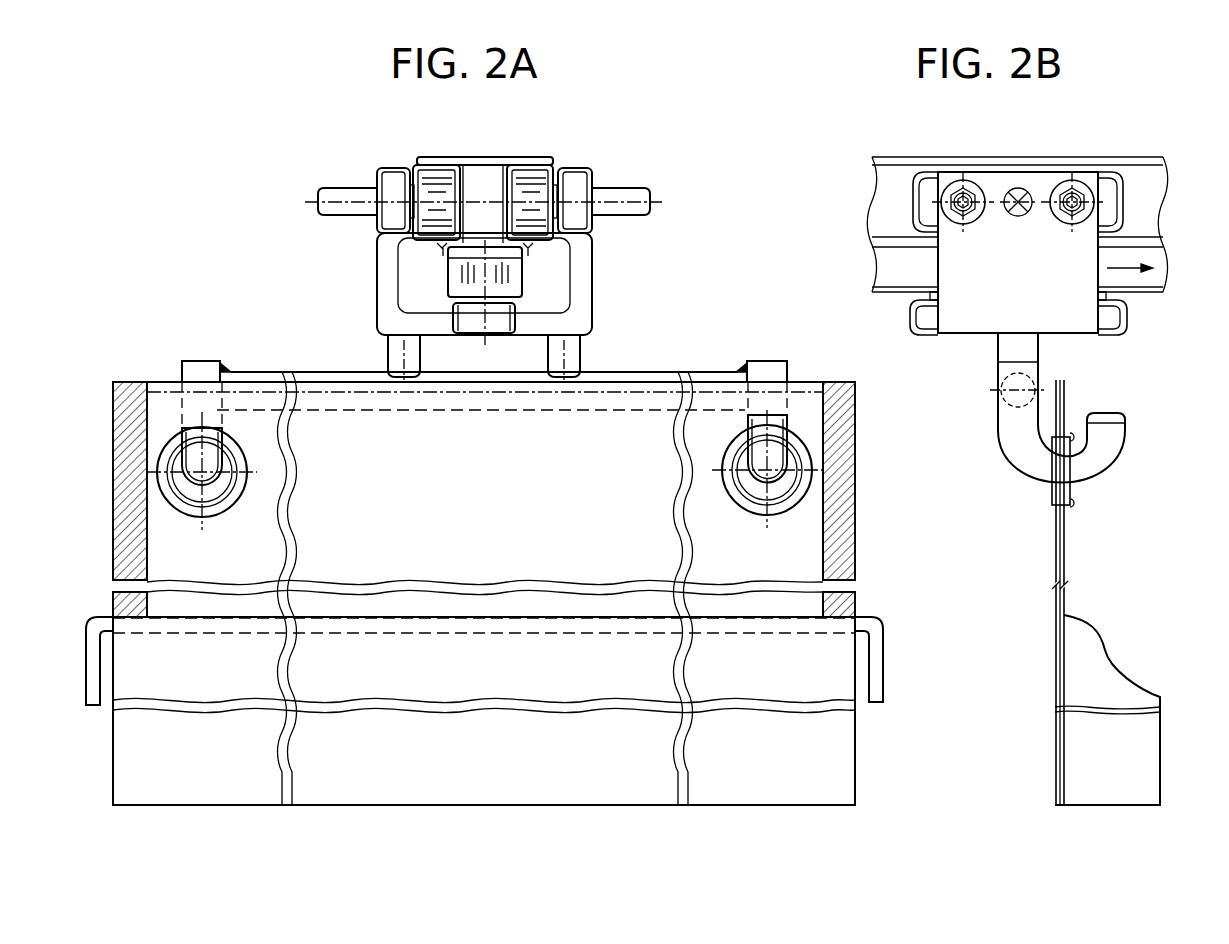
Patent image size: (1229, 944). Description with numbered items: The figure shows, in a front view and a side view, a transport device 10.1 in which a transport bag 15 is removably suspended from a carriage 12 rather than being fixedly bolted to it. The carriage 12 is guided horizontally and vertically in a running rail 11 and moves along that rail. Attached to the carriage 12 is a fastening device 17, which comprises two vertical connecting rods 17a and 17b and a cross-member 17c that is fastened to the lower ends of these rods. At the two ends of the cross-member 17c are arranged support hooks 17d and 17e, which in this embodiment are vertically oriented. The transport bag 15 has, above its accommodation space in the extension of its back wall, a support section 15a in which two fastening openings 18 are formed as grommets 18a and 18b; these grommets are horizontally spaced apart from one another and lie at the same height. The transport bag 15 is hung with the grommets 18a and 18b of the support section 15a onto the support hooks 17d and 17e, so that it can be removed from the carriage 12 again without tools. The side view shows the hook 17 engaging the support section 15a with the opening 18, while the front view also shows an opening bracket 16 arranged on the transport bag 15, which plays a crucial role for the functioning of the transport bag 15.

In FIG. 2A, the transport device 10.1 is at (262, 238).
In FIG. 2B, the transport device 10.1 is at (828, 244).
In FIG. 2A, the running rail 11 is at (528, 158).
In FIG. 2B, the running rail 11 is at (876, 206).
In FIG. 2A, the carriage 12 is at (584, 296).
In FIG. 2B, the carriage 12 is at (1064, 310).
In FIG. 2A, the transport bag 15 is at (866, 770).
In FIG. 2B, the transport bag 15 is at (1026, 720).
In FIG. 2A, the support section 15a is at (795, 549).
In FIG. 2B, the support section 15a is at (1068, 550).
In FIG. 2A, the opening bracket 16 is at (879, 667).
In FIG. 2B, the fastening device 17 is at (1018, 490).
In FIG. 2A, the vertical connecting rod 17a is at (400, 356).
In FIG. 2A, the vertical connecting rod 17b is at (574, 356).
In FIG. 2A, the cross-member 17c is at (320, 373).
In FIG. 2A, the support hook 17d is at (195, 435).
In FIG. 2A, the support hook 17e is at (758, 418).
In FIG. 2B, the fastening opening 18 is at (1097, 487).
In FIG. 2A, the grommet 18a is at (168, 450).
In FIG. 2A, the grommet 18b is at (795, 488).